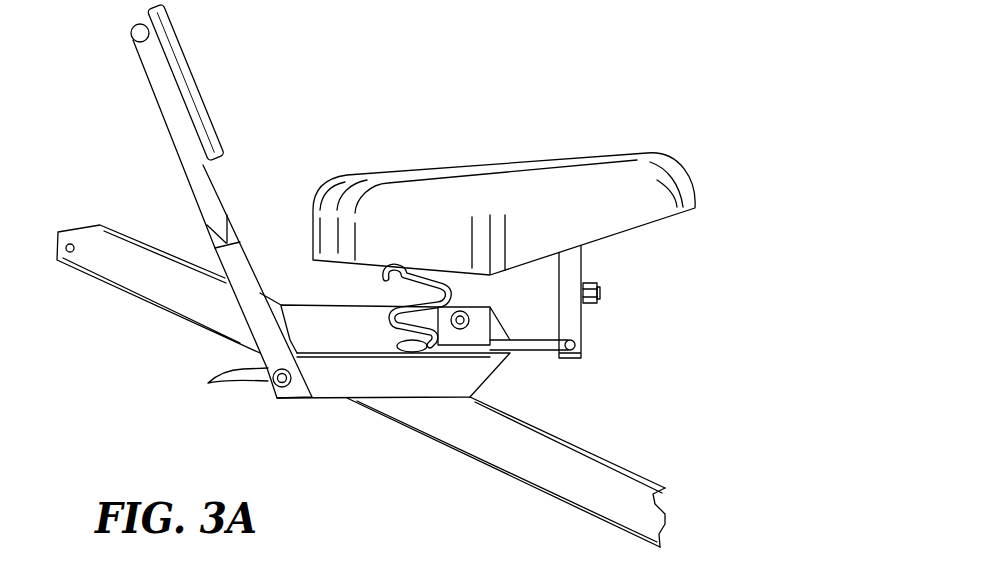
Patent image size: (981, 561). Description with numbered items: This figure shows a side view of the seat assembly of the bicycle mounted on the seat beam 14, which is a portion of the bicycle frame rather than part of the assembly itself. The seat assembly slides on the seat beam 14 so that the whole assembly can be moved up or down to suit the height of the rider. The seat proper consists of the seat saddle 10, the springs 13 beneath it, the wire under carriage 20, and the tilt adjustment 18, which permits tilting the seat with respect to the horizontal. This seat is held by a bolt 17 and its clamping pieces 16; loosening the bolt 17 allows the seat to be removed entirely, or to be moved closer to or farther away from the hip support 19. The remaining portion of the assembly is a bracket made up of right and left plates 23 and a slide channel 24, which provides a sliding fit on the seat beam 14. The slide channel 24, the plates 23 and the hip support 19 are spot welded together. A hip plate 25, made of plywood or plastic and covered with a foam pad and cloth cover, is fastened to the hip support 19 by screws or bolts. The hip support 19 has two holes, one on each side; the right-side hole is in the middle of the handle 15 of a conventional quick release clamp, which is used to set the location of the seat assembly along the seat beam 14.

The seat saddle 10 is at (598, 165).
The springs 13 is at (415, 270).
The seat beam 14 is at (587, 487).
The handle 15 is at (238, 385).
The clamping pieces 16 is at (440, 345).
The bolt 17 is at (470, 320).
The tilt adjustment 18 is at (598, 292).
The hip support 19 is at (131, 29).
The wire under carriage 20 is at (547, 352).
The plates 23 is at (340, 382).
The slide channel 24 is at (279, 304).
The hip plate 25 is at (194, 72).